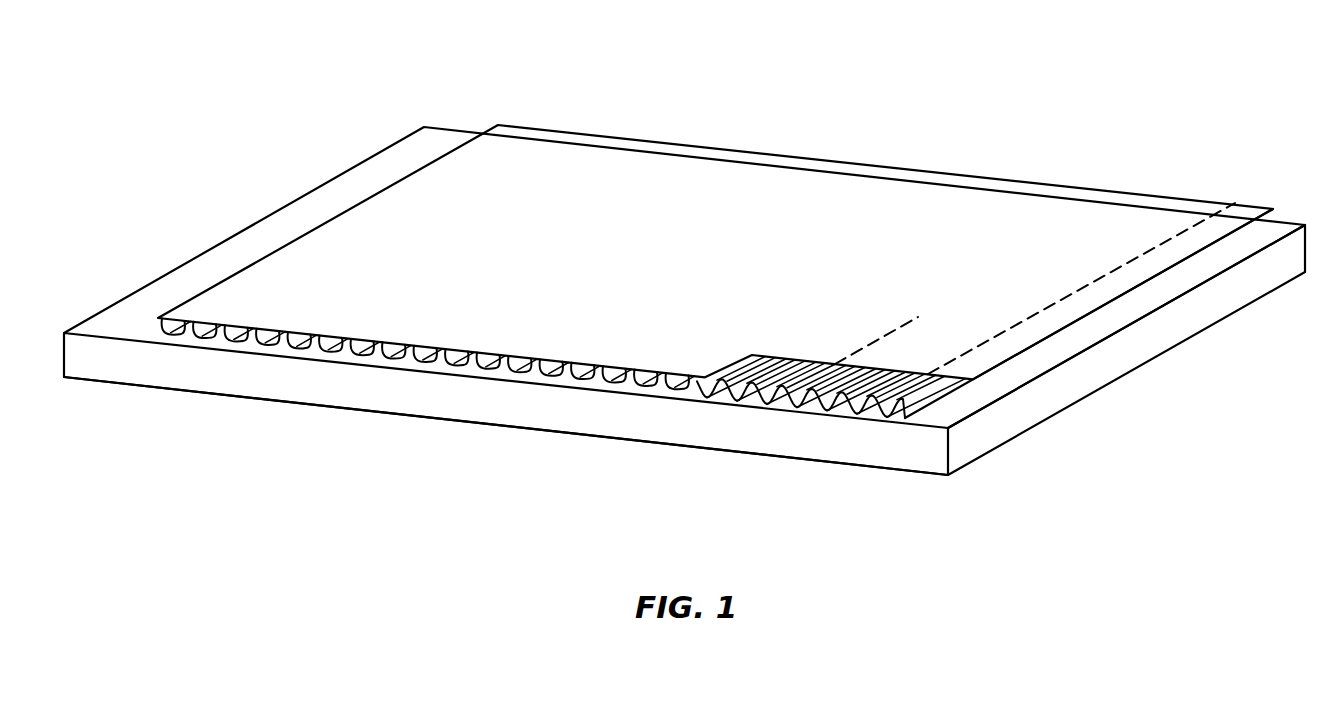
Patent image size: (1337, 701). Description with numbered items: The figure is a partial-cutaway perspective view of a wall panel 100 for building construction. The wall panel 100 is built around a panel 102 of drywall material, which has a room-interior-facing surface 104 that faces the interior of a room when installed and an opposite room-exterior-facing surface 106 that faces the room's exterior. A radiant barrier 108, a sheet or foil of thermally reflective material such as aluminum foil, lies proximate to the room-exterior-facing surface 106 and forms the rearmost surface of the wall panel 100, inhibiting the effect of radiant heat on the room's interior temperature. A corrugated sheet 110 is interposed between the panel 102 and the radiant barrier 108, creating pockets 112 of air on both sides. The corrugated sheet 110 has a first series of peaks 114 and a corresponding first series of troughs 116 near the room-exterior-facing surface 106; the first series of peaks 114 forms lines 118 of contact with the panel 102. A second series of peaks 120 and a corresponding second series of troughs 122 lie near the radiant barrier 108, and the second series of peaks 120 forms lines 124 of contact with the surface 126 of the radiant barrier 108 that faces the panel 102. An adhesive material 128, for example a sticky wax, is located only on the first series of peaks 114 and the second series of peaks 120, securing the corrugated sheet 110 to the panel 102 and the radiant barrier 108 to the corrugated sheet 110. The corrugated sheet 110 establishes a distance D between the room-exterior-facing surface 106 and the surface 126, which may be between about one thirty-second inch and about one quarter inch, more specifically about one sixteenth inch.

The wall panel 100 is at (921, 90).
The panel of drywall material 102 is at (930, 452).
The room-interior-facing surface 104 is at (893, 478).
The room-exterior-facing surface 106 is at (966, 402).
The radiant barrier 108 is at (521, 157).
The corrugated sheet 110 is at (197, 330).
The pockets 112 is at (638, 394).
The first series of peaks 114 is at (557, 378).
The first series of troughs 116 is at (488, 364).
The lines of contact 118 is at (778, 406).
The second series of peaks 120 is at (315, 343).
The second series of troughs 122 is at (360, 345).
The lines of contact 124 is at (1128, 262).
The surface of the radiant barrier 126 is at (1130, 302).
The adhesive material 128 is at (270, 362).
The distance D is at (438, 339).